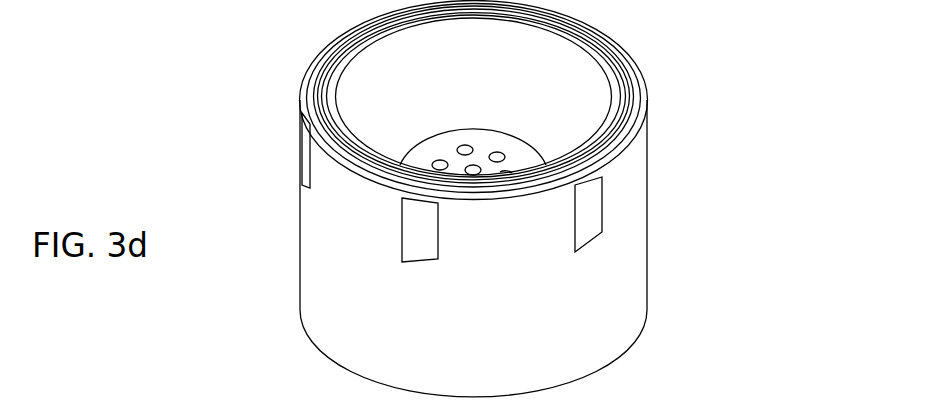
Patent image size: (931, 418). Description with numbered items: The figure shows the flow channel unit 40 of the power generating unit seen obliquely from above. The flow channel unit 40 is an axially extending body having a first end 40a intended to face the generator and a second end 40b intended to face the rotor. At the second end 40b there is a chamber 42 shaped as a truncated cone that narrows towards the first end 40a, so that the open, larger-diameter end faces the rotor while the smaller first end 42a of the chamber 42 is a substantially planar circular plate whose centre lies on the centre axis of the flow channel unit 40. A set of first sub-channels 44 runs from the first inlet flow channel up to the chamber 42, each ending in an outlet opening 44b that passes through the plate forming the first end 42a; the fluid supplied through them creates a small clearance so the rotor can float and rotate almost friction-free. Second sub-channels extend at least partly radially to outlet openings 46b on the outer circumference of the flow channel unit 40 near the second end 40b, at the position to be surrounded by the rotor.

The flow channel unit 40 is at (658, 208).
The first end of the flow channel unit 40a is at (613, 361).
The second end of the flow channel unit 40b is at (320, 40).
The chamber 42 is at (573, 76).
The first end of the chamber 42a is at (512, 151).
The first sub-channels 44 is at (450, 151).
The outlet opening of the first sub-channel 44b is at (465, 145).
The outlet opening of the second sub-channel 46b is at (410, 243).